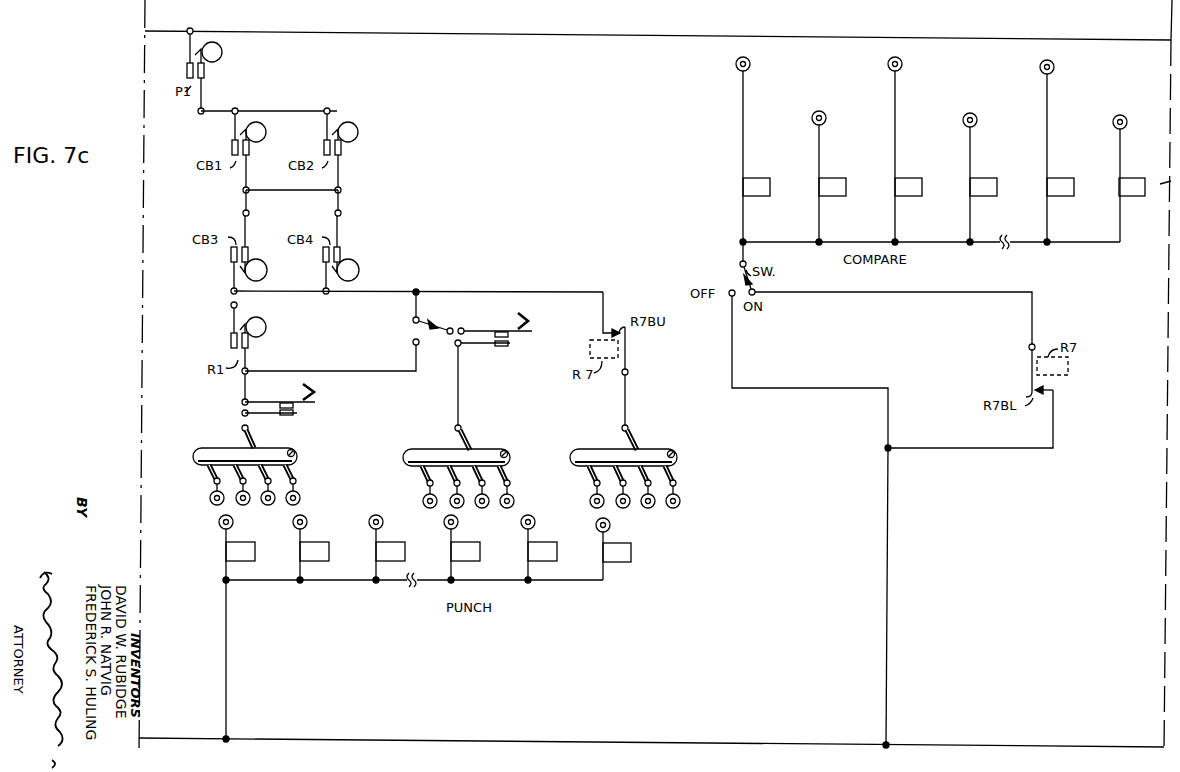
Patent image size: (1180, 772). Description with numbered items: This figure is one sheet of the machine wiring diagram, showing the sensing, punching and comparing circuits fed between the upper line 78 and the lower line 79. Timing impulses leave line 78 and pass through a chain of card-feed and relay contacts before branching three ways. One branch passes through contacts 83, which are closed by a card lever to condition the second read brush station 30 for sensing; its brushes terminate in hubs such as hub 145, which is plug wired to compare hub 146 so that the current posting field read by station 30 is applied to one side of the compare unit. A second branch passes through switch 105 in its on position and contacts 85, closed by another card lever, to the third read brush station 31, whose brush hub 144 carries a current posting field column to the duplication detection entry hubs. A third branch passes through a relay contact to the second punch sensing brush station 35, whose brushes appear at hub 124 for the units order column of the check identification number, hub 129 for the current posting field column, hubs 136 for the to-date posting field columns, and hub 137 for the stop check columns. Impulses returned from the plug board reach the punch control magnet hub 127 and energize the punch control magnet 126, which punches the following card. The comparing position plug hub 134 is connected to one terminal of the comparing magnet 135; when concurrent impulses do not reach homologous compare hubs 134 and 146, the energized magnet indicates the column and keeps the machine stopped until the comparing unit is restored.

The line 78 is at (534, 34).
The lower supply line 79 is at (519, 742).
The contacts 83 is at (298, 411).
The contacts 85 is at (511, 342).
The switch 105 is at (433, 328).
The second read brush station 30 is at (305, 455).
The third read brush station 31 is at (516, 452).
The second punch sensing brush station 35 is at (690, 452).
The hub 145 is at (210, 498).
The hub 144 is at (423, 501).
The hub 137 is at (590, 501).
The second punch station hubs 136 is at (625, 509).
The hub 129 is at (650, 509).
The hub 124 is at (681, 501).
The punch control magnet hub 127 is at (596, 525).
The punch control magnet 126 is at (617, 562).
The hub 146 is at (1040, 66).
The comparing position plug hub 134 is at (1114, 118).
The comparing magnet 135 is at (1127, 186).